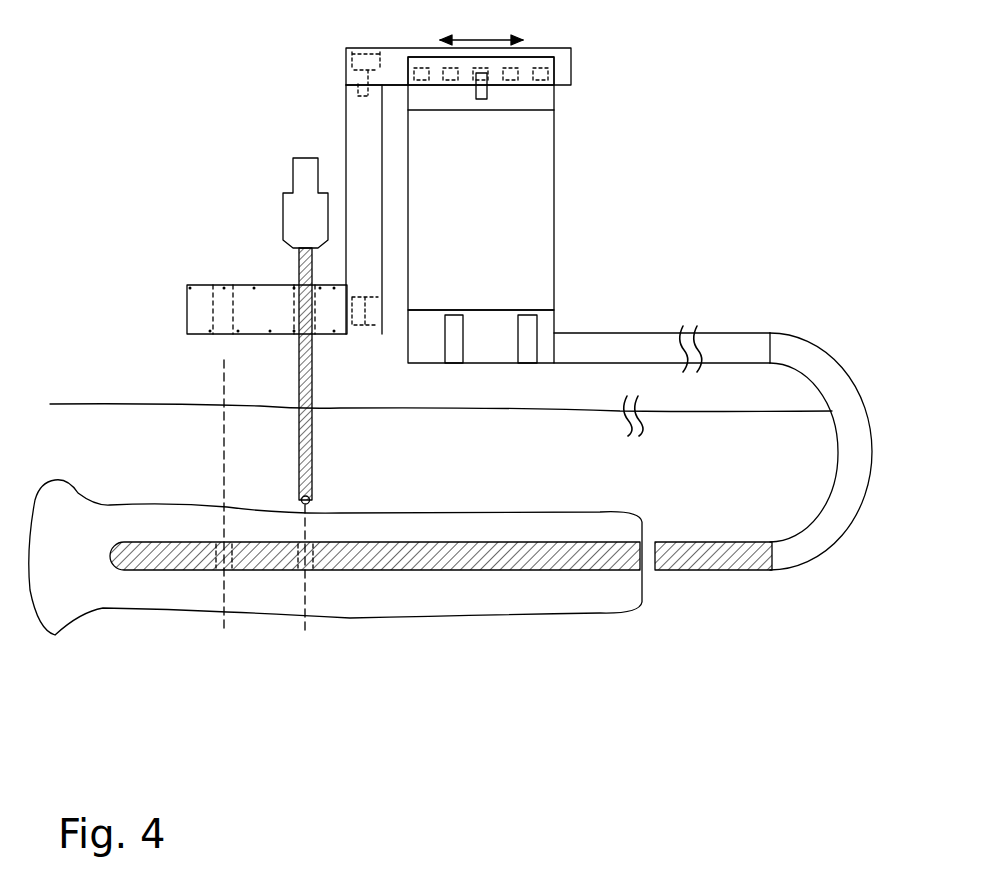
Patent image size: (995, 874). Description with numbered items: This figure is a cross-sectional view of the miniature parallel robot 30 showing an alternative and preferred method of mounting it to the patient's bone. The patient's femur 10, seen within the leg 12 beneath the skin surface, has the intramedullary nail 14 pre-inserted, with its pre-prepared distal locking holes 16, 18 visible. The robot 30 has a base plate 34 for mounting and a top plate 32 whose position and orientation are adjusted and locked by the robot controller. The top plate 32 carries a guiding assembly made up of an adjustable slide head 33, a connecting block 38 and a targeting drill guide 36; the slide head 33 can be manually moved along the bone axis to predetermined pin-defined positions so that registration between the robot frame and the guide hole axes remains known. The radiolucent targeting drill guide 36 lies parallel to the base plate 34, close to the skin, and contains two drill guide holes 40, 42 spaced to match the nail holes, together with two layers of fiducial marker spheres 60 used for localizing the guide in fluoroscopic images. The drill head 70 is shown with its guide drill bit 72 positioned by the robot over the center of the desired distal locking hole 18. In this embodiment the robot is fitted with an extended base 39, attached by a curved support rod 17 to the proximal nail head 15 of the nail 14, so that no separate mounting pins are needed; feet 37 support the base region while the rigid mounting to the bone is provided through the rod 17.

The femur 10 is at (610, 511).
The leg 12 is at (586, 474).
The intramedullary nail 14 is at (562, 572).
The intramedullary proximal nail head 15 is at (772, 570).
The hole in the nail 16 is at (220, 570).
The curved support rod 17 is at (824, 348).
The hole in the nail 18 is at (300, 570).
The robot 30 is at (556, 220).
The top plate 32 is at (556, 97).
The adjustable slide head 33 is at (562, 48).
The base plate 34 is at (557, 323).
The targeting drill guide 36 is at (187, 310).
The feet 37 is at (546, 363).
The connecting block 38 is at (346, 98).
The extended base 39 is at (660, 333).
The drill guide hole 40 is at (222, 285).
The drill guide hole 42 is at (298, 290).
The fiducial marker spheres 60 is at (191, 285).
The drill head 70 is at (283, 205).
The guide drill bit 72 is at (298, 378).